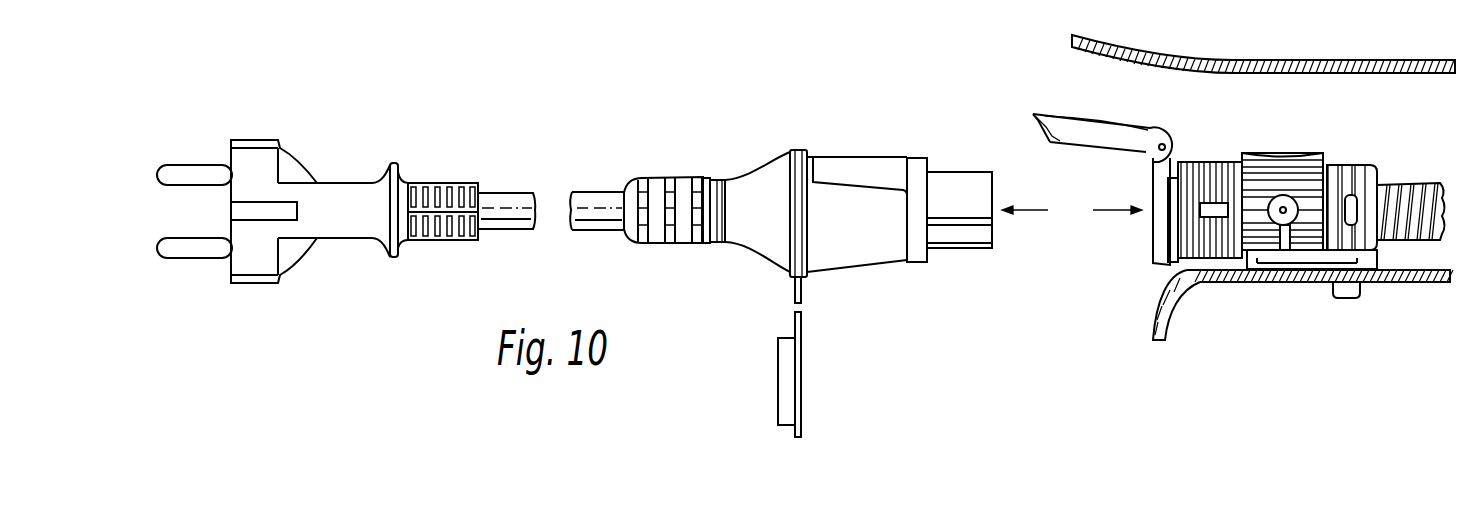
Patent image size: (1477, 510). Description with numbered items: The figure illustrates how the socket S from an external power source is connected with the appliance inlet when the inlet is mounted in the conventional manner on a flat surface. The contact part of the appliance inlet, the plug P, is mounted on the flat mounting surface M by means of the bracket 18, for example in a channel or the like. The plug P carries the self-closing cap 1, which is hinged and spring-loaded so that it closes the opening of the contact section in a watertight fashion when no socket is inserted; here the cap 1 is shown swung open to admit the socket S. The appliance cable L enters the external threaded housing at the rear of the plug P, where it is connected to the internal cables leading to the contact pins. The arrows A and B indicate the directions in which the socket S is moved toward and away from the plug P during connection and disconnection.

The self-closing cap 1 is at (1062, 123).
The bracket 18 is at (1297, 258).
The insertion direction arrow A is at (1117, 190).
The withdrawal direction arrow B is at (1025, 190).
The appliance cable L is at (1408, 187).
The mounting surface M is at (1180, 304).
The plug P is at (1160, 247).
The socket S is at (955, 230).